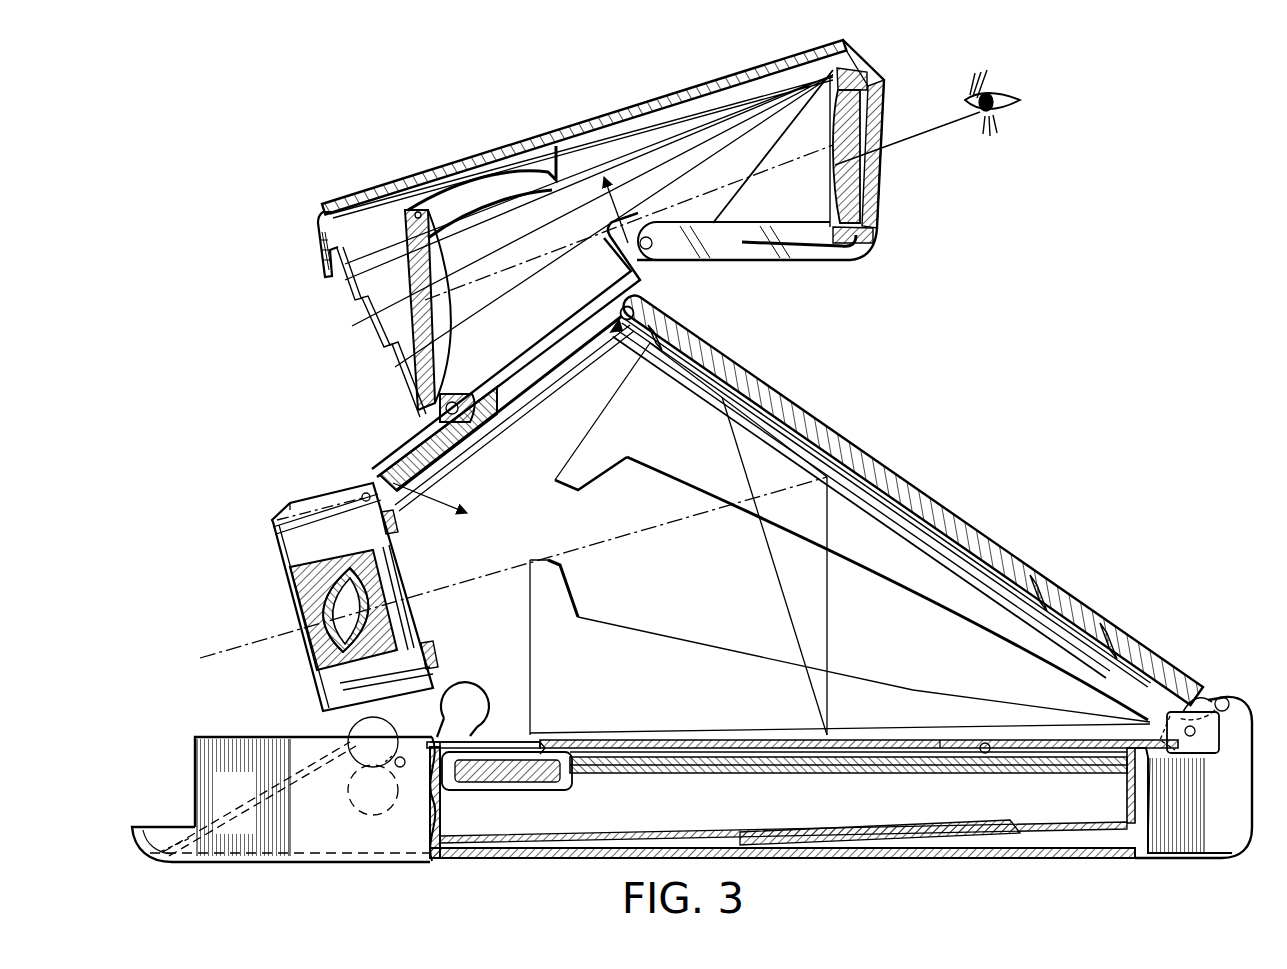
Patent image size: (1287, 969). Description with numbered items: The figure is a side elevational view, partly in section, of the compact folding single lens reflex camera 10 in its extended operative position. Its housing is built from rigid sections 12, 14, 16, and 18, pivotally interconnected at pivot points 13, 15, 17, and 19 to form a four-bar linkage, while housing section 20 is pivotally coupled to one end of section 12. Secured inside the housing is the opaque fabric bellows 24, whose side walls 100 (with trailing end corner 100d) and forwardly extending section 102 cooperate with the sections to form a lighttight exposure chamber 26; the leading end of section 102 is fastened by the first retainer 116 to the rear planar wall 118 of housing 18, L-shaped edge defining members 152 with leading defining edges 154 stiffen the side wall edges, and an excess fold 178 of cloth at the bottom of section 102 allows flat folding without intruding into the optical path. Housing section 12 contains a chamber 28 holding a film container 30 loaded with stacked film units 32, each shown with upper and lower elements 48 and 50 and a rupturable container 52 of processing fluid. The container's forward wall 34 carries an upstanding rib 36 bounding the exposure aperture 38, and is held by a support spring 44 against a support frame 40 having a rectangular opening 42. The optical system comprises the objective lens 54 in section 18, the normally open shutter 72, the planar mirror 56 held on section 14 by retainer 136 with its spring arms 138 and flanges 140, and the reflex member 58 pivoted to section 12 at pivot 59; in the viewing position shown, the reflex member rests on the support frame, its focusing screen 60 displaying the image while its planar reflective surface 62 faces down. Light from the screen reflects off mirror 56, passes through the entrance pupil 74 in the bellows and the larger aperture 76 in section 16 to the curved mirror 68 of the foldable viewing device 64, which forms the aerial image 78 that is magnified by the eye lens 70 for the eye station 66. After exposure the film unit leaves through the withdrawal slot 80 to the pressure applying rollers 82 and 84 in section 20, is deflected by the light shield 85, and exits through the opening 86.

The camera 10 is at (955, 432).
The first housing section 12 is at (1132, 860).
The pivot point 13 is at (1229, 702).
The housing section 14 is at (1122, 648).
The pivot point 15 is at (617, 312).
The housing section 16 is at (425, 450).
The pivot point 17 is at (364, 506).
The housing section 18 is at (282, 520).
The pivot point 19 is at (403, 756).
The housing section 20 is at (335, 856).
The bellows 24 is at (900, 530).
The exposure chamber 26 is at (390, 480).
The chamber 28 is at (912, 835).
The film container 30 is at (1032, 832).
The film unit 32 is at (660, 776).
The forward wall 34 is at (515, 742).
The upstanding rib 36 is at (564, 740).
The exposure aperture 38 is at (590, 742).
The support frame 40 is at (460, 746).
The rectangular opening 42 is at (1100, 745).
The support spring 44 is at (868, 835).
The upper element 48 is at (676, 748).
The lower element 50 is at (725, 758).
The rupturable container 52 is at (495, 790).
The objective lens 54 is at (310, 600).
The planar mirror 56 is at (922, 546).
The reflex member 58 is at (888, 733).
The pivot 59 is at (1215, 748).
The focusing screen 60 is at (948, 745).
The planar reflective surface 62 is at (990, 744).
The viewing device 64 is at (601, 228).
The eye station 66 is at (968, 128).
The curved mirror 68 is at (440, 262).
The eye lens 70 is at (838, 192).
The shutter 72 is at (395, 524).
The entrance pupil 74 is at (612, 350).
The aperture 76 is at (528, 368).
The aerial image 78 is at (602, 190).
The withdrawal slot 80 is at (428, 784).
The pressure applying roller 82 is at (383, 728).
The pressure applying roller 84 is at (352, 770).
The light shield 85 is at (316, 758).
The opening 86 is at (180, 856).
The side wall 100 is at (860, 660).
The trailing end corner 100d is at (1188, 700).
The forwardly extending section 102 is at (530, 440).
The first retainer 116 is at (398, 522).
The rear planar wall 118 is at (418, 662).
The retainer 136 is at (875, 512).
The spring arm 138 is at (1048, 608).
The flange 140 is at (645, 335).
The edge defining member 152 is at (670, 476).
The leading defining edge 154 is at (596, 424).
The fold 178 is at (484, 698).